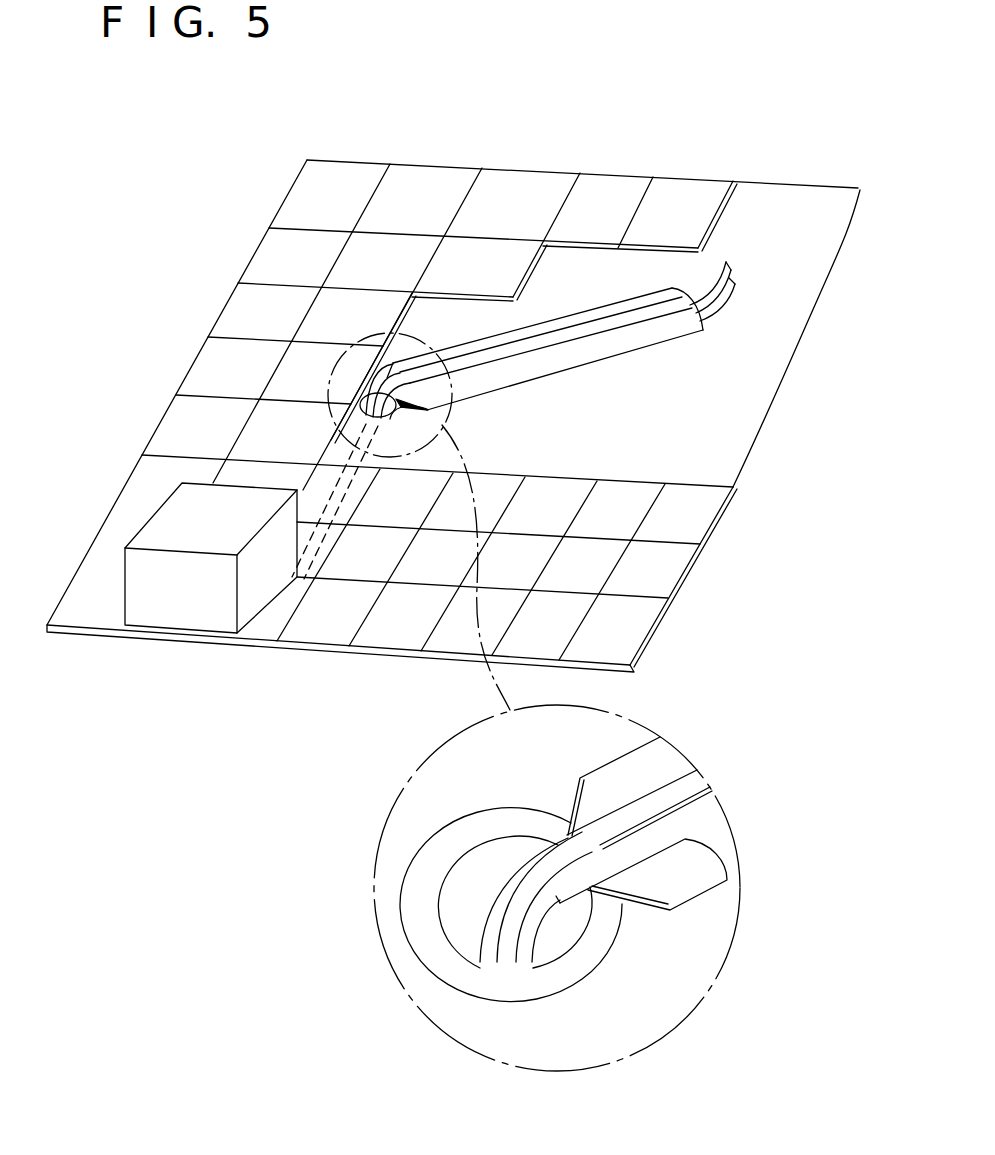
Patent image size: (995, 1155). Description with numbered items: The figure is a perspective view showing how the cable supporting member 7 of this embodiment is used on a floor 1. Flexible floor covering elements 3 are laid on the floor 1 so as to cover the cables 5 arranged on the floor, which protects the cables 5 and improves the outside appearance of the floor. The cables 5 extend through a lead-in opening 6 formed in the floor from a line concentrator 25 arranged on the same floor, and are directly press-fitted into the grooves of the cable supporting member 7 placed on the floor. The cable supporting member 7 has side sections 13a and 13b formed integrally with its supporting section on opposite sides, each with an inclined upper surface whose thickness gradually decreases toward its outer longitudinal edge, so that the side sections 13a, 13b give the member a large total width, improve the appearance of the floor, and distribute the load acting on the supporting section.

The floor 1 is at (723, 441).
The flexible floor covering element 3 is at (245, 310).
The cable 5 is at (728, 265).
The lead-in opening 6 is at (340, 417).
The cable supporting member 7 is at (531, 375).
The side section 13a is at (667, 902).
The side section 13b is at (623, 770).
The line concentrator 25 is at (187, 605).